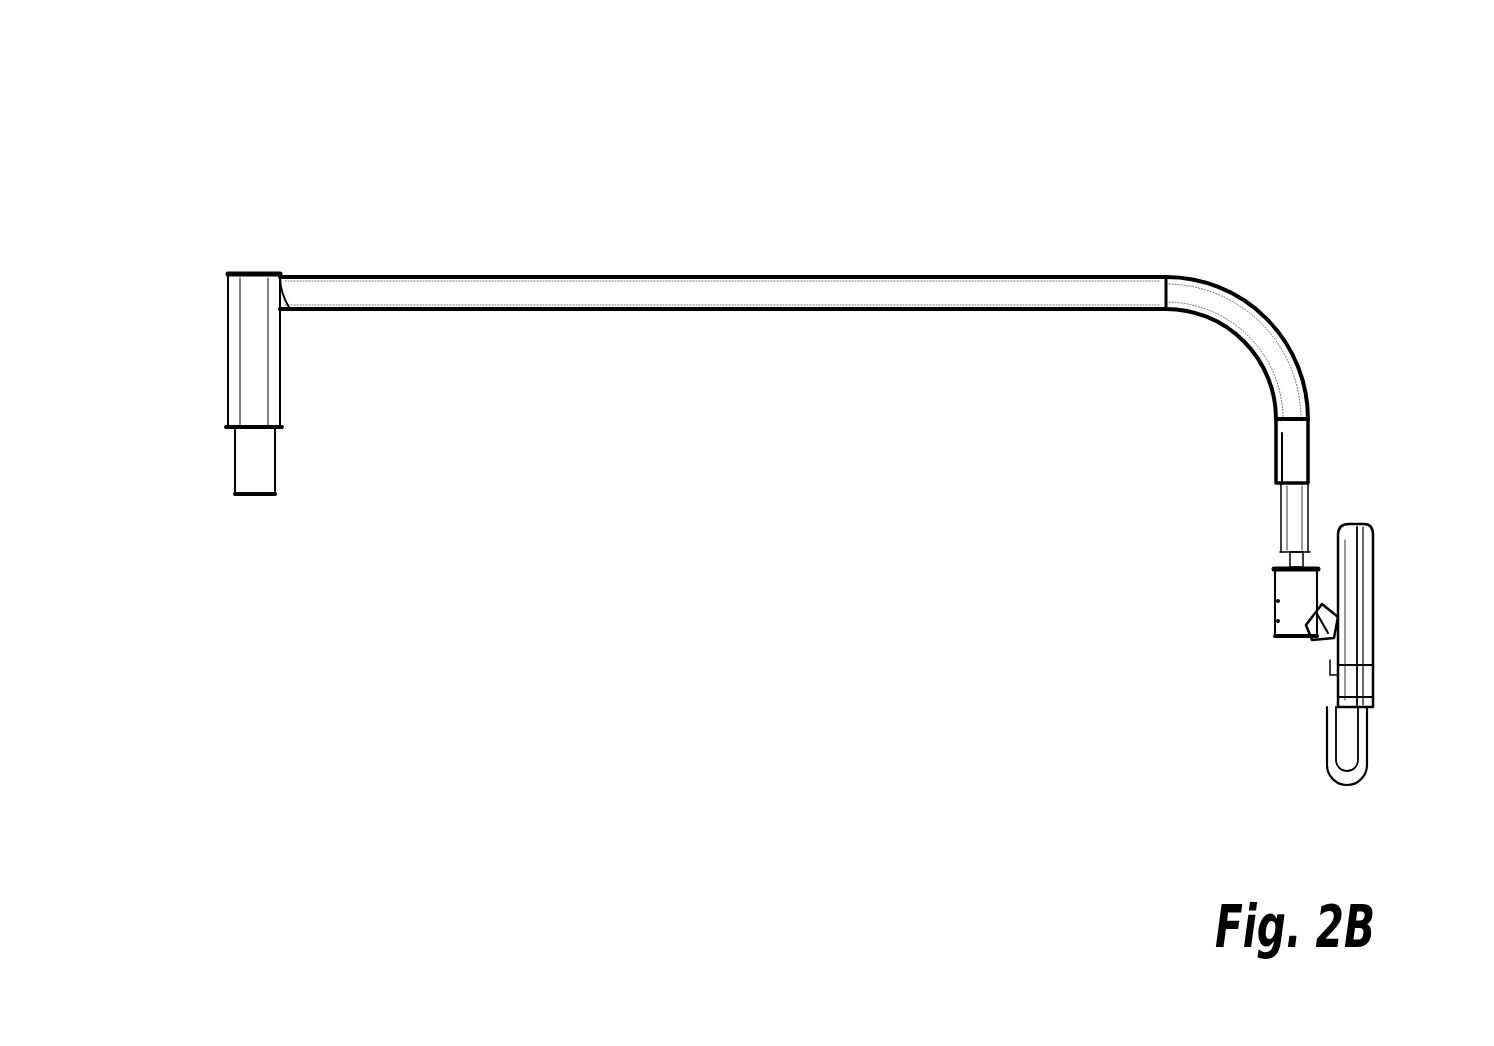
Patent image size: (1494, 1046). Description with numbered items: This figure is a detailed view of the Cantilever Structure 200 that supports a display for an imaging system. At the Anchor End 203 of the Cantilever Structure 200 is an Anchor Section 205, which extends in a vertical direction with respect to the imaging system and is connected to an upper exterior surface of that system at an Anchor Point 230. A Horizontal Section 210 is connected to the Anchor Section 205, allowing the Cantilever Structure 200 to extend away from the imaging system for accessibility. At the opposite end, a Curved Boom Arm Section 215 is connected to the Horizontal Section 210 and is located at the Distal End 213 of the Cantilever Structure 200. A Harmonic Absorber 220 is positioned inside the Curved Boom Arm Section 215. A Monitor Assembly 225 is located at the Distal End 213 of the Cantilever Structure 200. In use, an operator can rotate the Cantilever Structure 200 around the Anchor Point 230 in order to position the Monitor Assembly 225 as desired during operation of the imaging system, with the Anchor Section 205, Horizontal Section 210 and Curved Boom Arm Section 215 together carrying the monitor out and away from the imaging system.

The cantilever structure 200 is at (203, 88).
The anchor end 203 is at (206, 346).
The anchor section 205 is at (245, 382).
The horizontal section 210 is at (722, 297).
The distal end 213 is at (1270, 273).
The curved boom arm section 215 is at (1288, 362).
The harmonic absorber 220 is at (1282, 527).
The monitor assembly 225 is at (1362, 523).
The anchor point 230 is at (260, 498).